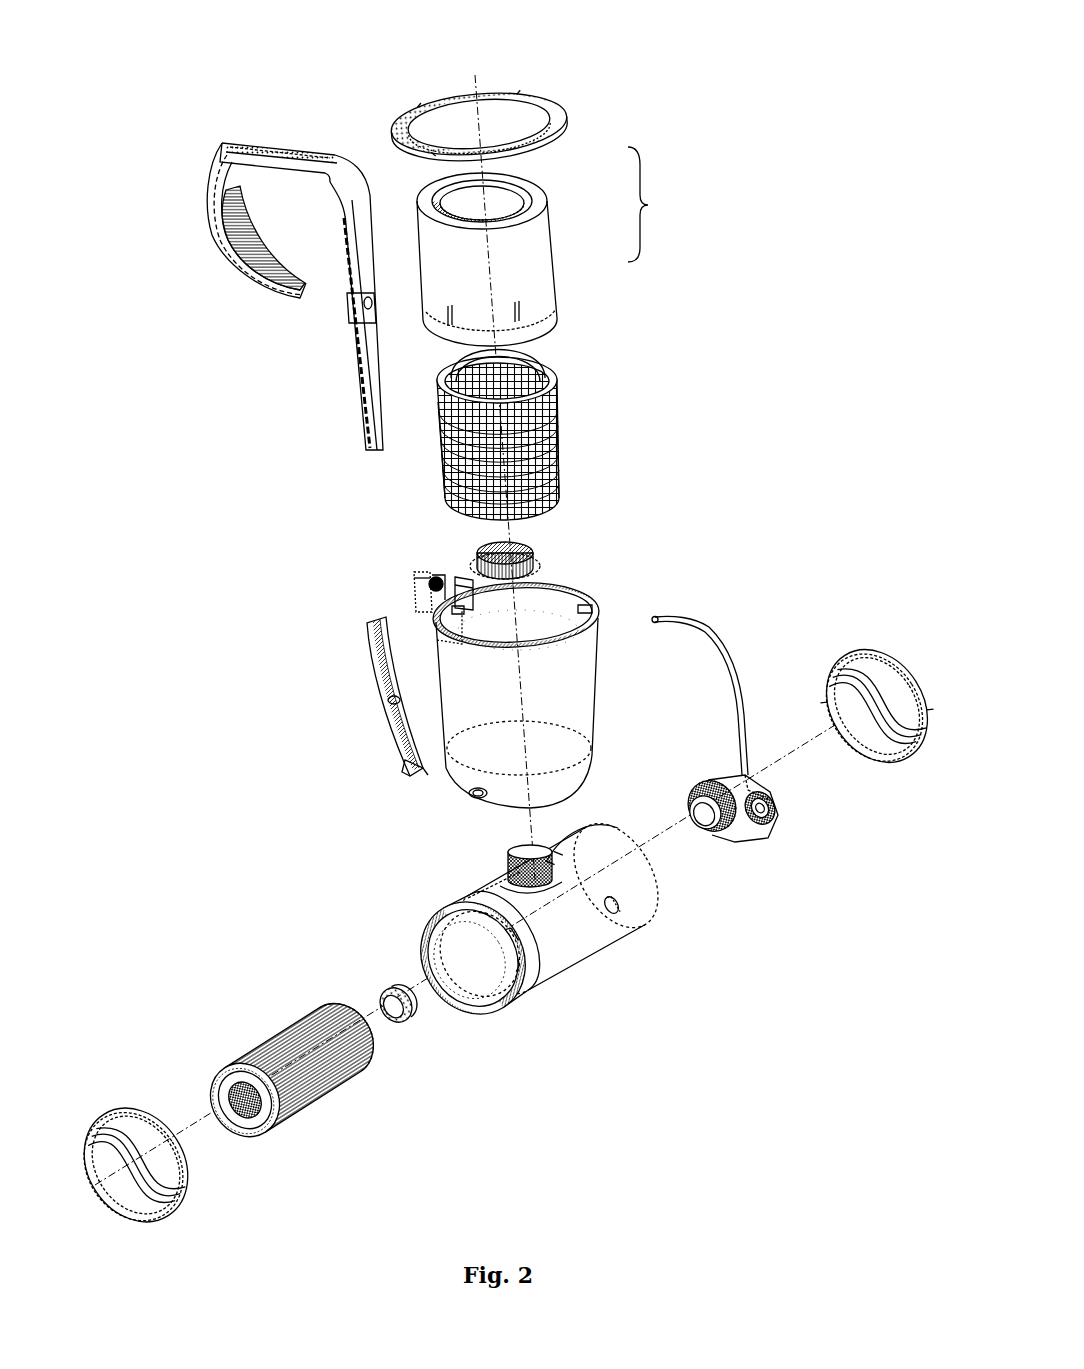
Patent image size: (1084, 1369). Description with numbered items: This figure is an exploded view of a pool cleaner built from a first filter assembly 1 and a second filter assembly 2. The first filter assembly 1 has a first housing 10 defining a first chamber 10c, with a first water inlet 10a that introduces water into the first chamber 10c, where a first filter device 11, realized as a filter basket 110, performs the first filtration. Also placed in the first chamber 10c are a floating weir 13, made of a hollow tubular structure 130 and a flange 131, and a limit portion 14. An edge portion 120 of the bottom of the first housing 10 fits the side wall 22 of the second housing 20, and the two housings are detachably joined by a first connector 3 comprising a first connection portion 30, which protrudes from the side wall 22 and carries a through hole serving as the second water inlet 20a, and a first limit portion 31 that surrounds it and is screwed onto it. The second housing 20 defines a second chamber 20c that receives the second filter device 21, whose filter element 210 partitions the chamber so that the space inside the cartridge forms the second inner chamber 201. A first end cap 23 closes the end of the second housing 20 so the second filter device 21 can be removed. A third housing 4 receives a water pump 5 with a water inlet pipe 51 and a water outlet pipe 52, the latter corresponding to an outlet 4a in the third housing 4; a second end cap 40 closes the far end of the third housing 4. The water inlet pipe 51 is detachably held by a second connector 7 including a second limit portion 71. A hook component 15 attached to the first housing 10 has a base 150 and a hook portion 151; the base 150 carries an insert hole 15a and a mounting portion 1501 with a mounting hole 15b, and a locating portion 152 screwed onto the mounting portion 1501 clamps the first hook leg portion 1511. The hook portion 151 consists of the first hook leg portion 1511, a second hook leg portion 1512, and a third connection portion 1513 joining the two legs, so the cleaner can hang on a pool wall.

The first filter assembly 1 is at (590, 512).
The second filter assembly 2 is at (448, 983).
The first connector 3 is at (550, 835).
The third housing 4 is at (546, 941).
The outlet 4a is at (615, 904).
The water pump 5 is at (725, 754).
The second connector 7 is at (427, 985).
The first housing 10 is at (548, 682).
The first water inlet 10a is at (555, 598).
The first chamber 10c is at (526, 632).
The first filter device 11 is at (481, 411).
The floating weir 13 is at (545, 246).
The limit portion 14 is at (535, 100).
The hook component 15 is at (249, 247).
The insert hole 15a is at (428, 565).
The mounting hole 15b is at (440, 578).
The second housing 20 is at (527, 972).
The second water inlet 20a is at (518, 853).
The second chamber 20c is at (490, 968).
The second filter device 21 is at (319, 1091).
The side wall 22 is at (470, 898).
The first end cap 23 is at (160, 1170).
The first connection portion 30 is at (555, 860).
The first limit portion 31 is at (480, 552).
The second end cap 40 is at (877, 760).
The water inlet pipe 51 is at (712, 830).
The water outlet pipe 52 is at (745, 800).
The second limit portion 71 is at (414, 1015).
The filter basket 110 is at (445, 455).
The edge portion 120 is at (510, 790).
The hollow tubular structure 130 is at (535, 258).
The flange 131 is at (505, 185).
The base 150 is at (381, 613).
The hook portion 151 is at (208, 178).
The locating portion 152 is at (437, 580).
The second inner chamber 201 is at (252, 1103).
The filter element 210 is at (358, 1083).
The mounting portion 1501 is at (410, 592).
The first hook leg portion 1511 is at (358, 212).
The second hook leg portion 1512 is at (212, 222).
The third connection portion 1513 is at (286, 150).